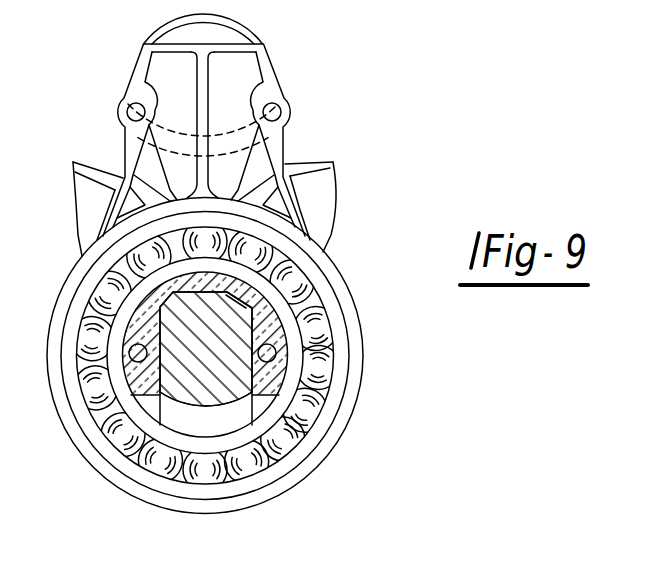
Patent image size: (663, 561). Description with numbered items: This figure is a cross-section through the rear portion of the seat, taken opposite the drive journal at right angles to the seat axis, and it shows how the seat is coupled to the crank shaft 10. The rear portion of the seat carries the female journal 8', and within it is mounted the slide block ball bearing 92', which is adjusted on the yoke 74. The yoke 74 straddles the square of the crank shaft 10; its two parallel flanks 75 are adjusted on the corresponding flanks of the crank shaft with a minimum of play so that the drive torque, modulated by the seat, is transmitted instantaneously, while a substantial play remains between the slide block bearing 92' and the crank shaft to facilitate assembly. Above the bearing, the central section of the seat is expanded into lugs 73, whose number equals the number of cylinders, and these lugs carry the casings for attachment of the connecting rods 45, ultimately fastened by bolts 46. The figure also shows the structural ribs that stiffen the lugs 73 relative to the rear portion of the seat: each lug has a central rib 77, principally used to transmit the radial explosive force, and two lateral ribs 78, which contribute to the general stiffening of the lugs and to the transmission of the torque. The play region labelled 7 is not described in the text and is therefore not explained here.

The connecting rods 45 is at (235, 38).
The lugs 73 is at (242, 81).
The bolts 46 is at (136, 108).
The lateral ribs 78 is at (127, 158).
The central rib 77 is at (208, 175).
The female journal 8' is at (217, 356).
The slide block ball bearing 92' is at (264, 356).
The parallel flanks 75 is at (253, 382).
The yoke 74 is at (130, 380).
The bore 7 is at (182, 422).
The crank shaft 10 is at (230, 388).